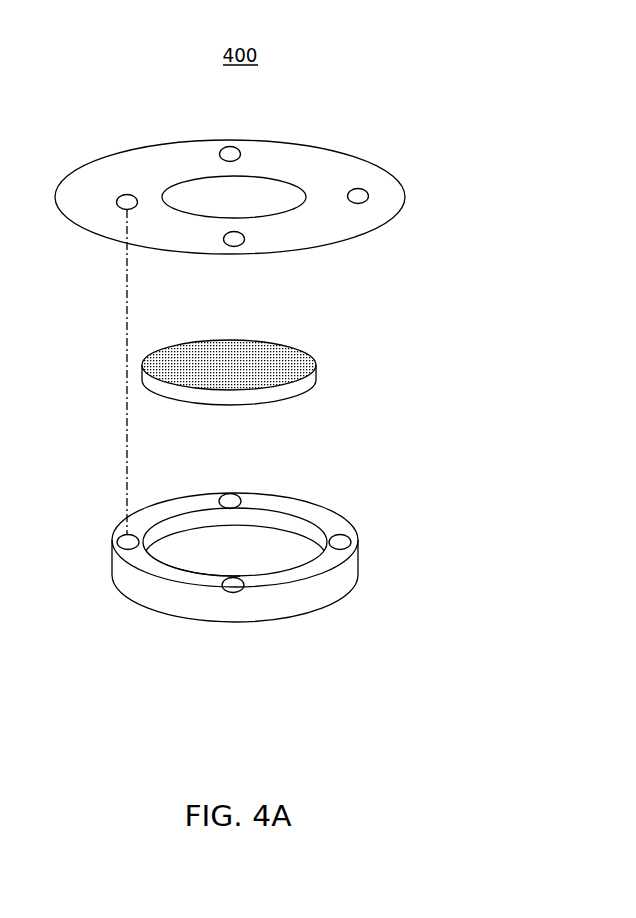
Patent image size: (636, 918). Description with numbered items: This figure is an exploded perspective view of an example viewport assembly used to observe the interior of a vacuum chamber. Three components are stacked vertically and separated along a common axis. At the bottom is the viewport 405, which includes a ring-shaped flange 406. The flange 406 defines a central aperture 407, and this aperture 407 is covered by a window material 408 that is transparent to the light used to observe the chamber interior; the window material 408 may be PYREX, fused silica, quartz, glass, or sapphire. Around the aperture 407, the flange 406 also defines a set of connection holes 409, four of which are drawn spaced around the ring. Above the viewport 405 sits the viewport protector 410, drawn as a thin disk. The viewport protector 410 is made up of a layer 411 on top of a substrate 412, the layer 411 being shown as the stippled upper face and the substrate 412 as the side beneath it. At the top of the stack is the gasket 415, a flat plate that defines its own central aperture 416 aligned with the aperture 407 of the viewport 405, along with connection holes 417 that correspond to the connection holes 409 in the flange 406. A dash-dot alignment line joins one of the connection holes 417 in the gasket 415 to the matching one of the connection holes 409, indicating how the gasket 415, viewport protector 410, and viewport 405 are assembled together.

The viewport 405 is at (284, 583).
The flange 406 is at (315, 595).
The aperture 407 is at (263, 540).
The window material 408 is at (217, 555).
The connection holes 409 is at (224, 583).
The viewport protector 410 is at (294, 360).
The layer 411 is at (238, 353).
The substrate 412 is at (307, 387).
The gasket 415 is at (437, 183).
The aperture 416 is at (247, 192).
The connection holes 417 is at (362, 195).